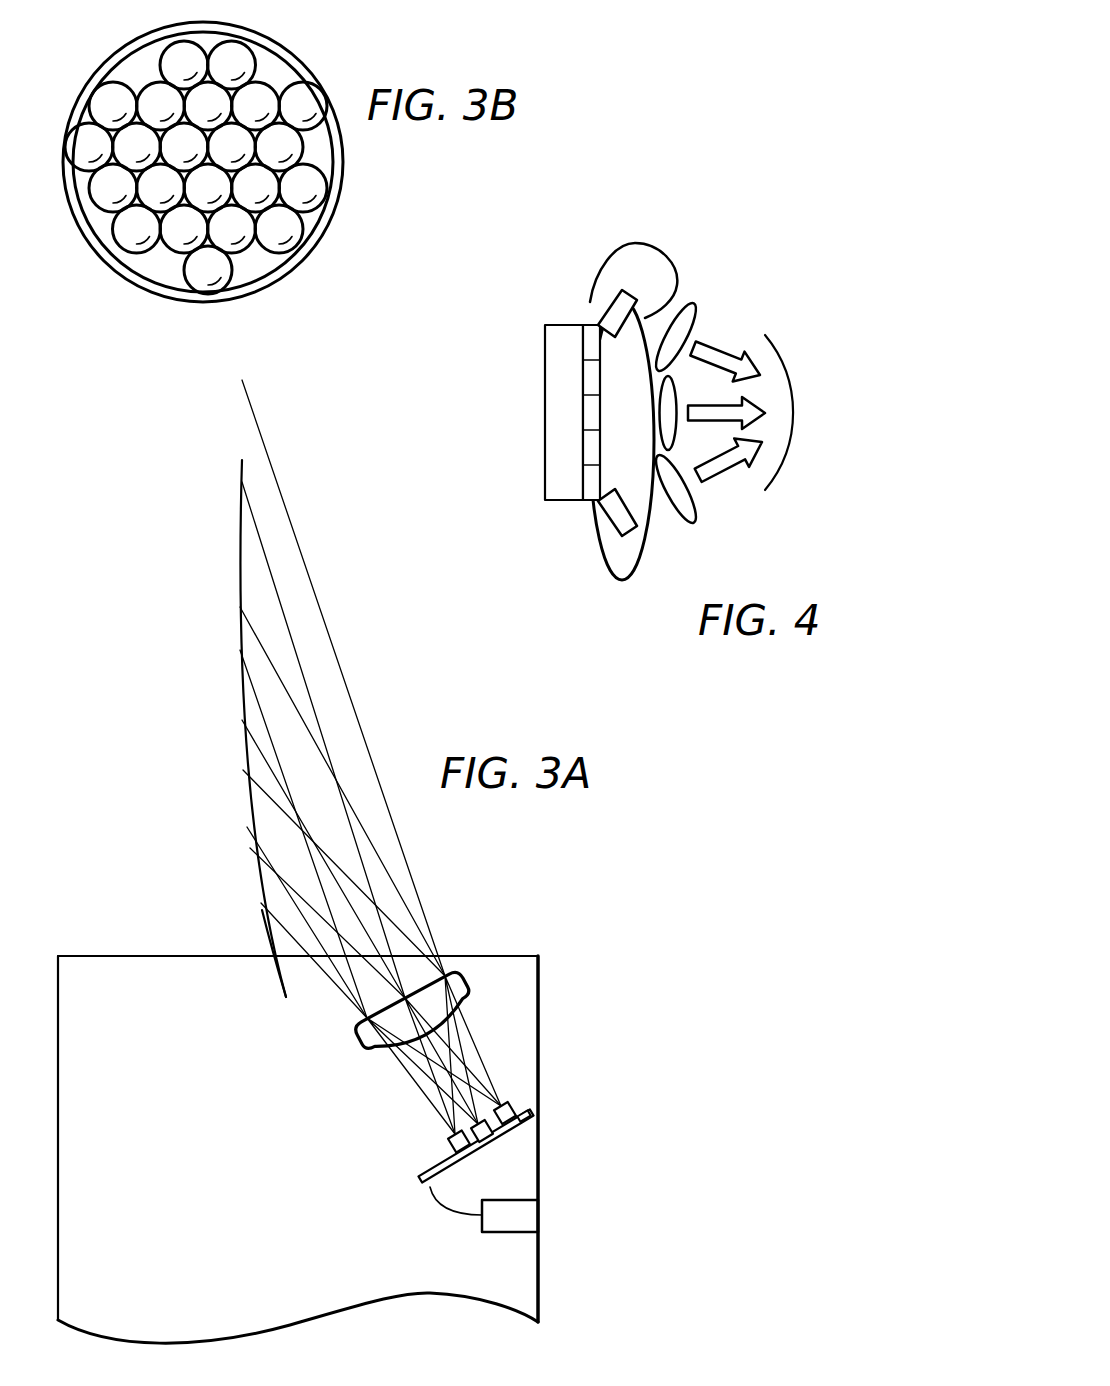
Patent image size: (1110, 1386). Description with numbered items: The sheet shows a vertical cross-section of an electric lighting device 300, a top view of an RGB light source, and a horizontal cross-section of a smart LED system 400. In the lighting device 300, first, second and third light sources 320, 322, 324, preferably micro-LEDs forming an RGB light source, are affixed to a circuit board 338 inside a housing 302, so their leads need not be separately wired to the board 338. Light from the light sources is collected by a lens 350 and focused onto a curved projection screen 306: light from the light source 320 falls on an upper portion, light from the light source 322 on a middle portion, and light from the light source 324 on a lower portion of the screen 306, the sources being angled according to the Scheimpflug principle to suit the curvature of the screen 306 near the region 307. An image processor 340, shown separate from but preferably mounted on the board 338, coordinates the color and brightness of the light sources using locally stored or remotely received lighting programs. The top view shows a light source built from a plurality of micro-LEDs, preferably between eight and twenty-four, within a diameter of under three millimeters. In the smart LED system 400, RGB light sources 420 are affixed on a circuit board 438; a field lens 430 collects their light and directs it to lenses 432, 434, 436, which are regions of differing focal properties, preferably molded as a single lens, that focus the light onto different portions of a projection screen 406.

In FIG. 3A, the electric lighting device 300 is at (598, 991).
In FIG. 3A, the housing 302 is at (540, 1268).
In FIG. 3A, the projection screen 306 is at (241, 497).
In FIG. 3A, the object surface portion 307 is at (268, 950).
In FIG. 3A, the first light source 320 is at (467, 1150).
In FIG. 3A, the second light source 322 is at (490, 1136).
In FIG. 3A, the third light source 324 is at (513, 1105).
In FIG. 3A, the circuit board 338 is at (530, 1120).
In FIG. 3A, the image processor 340 is at (523, 1217).
In FIG. 3A, the lens 350 is at (470, 983).
In FIG. 4, the smart LED system 400 is at (781, 262).
In FIG. 4, the projection screen 406 is at (773, 467).
In FIG. 4, the RGB light sources 420 is at (587, 310).
In FIG. 4, the field lens 430 is at (676, 288).
In FIG. 4, the lens 432 is at (697, 315).
In FIG. 4, the lens 434 is at (677, 393).
In FIG. 4, the lens 436 is at (698, 504).
In FIG. 4, the circuit board 438 is at (543, 347).